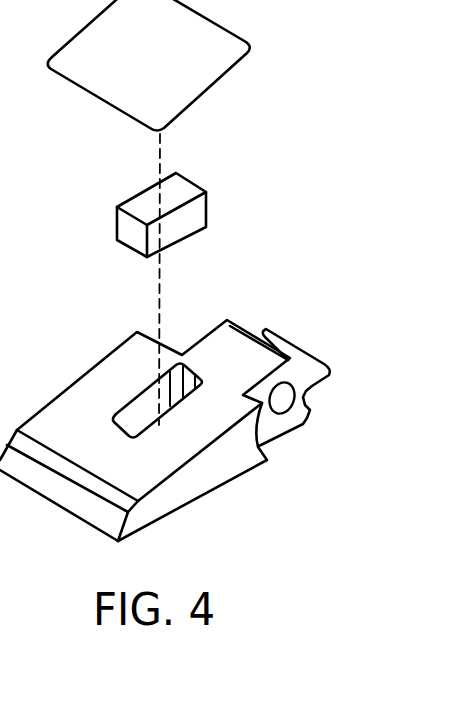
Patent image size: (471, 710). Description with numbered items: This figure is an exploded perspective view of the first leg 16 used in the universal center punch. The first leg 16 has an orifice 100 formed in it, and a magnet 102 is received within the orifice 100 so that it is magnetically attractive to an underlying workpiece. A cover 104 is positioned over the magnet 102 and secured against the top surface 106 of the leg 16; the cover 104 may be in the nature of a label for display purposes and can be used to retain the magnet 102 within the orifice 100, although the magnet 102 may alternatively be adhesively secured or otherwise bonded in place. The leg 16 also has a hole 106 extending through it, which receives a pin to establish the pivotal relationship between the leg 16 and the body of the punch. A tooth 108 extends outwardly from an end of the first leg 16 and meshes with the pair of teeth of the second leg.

The first leg 16 is at (200, 418).
The orifice 100 is at (173, 367).
The magnet 102 is at (198, 211).
The cover 104 is at (212, 72).
The top surface 106 is at (85, 390).
The tooth 108 is at (328, 372).